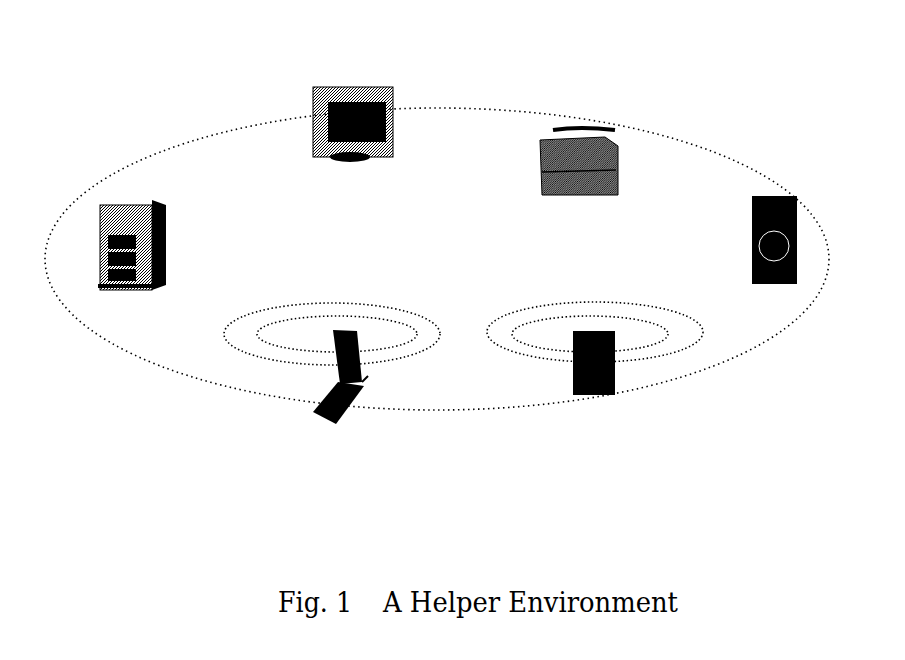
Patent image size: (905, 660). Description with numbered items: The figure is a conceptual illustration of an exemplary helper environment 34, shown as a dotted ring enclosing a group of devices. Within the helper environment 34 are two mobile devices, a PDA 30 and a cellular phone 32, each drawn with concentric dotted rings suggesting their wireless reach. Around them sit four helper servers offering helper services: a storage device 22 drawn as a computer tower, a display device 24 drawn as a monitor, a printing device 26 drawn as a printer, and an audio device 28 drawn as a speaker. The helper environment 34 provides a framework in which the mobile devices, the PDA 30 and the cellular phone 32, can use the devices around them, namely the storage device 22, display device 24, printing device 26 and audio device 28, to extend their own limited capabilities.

The storage device 22 is at (110, 210).
The display device 24 is at (385, 110).
The printing device 26 is at (605, 148).
The audio device 28 is at (795, 215).
The PDA 30 is at (612, 372).
The cellular phone 32 is at (355, 398).
The helper environment 34 is at (178, 396).